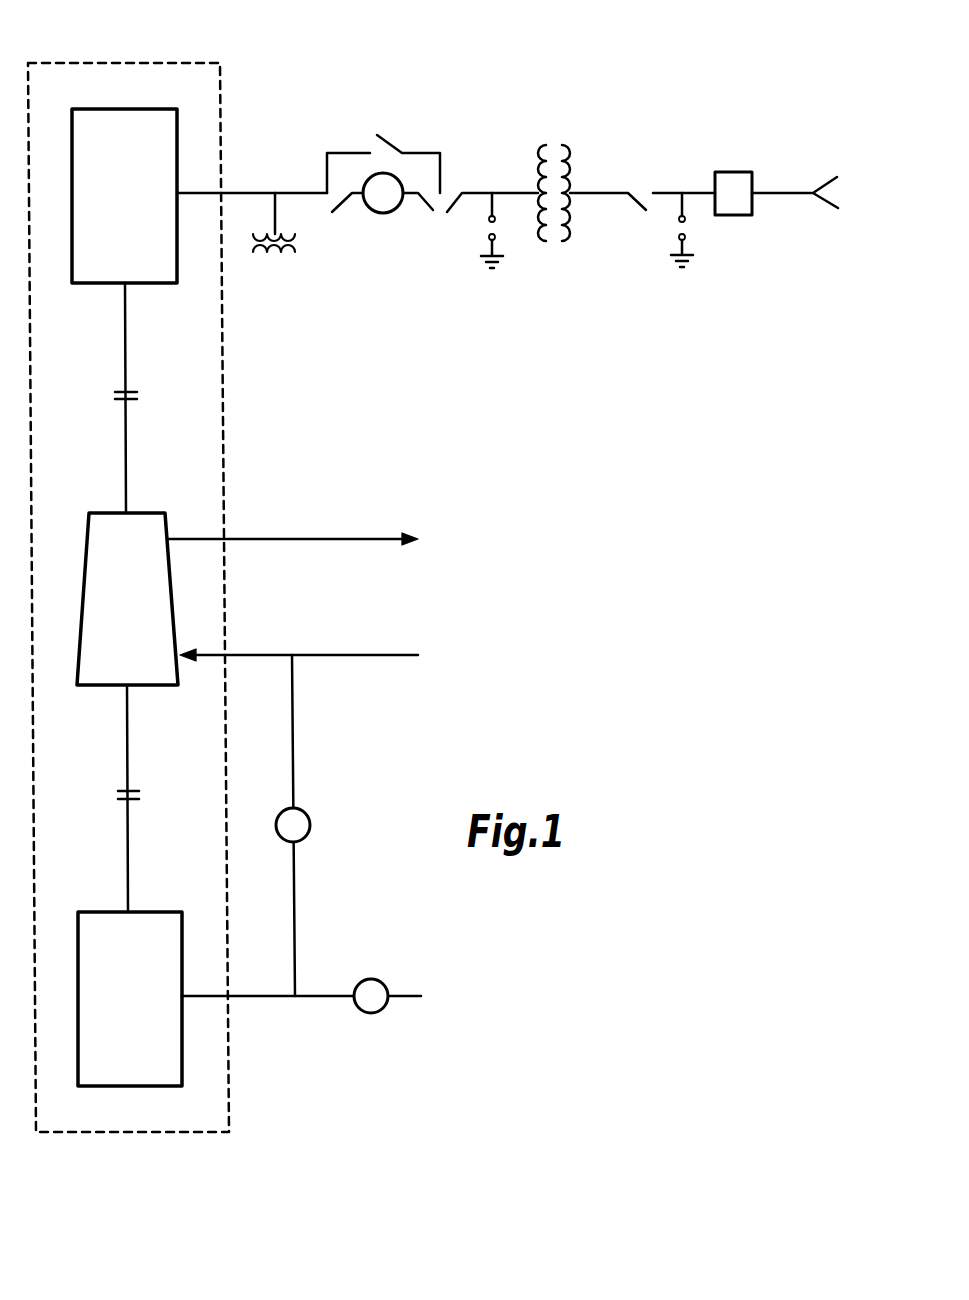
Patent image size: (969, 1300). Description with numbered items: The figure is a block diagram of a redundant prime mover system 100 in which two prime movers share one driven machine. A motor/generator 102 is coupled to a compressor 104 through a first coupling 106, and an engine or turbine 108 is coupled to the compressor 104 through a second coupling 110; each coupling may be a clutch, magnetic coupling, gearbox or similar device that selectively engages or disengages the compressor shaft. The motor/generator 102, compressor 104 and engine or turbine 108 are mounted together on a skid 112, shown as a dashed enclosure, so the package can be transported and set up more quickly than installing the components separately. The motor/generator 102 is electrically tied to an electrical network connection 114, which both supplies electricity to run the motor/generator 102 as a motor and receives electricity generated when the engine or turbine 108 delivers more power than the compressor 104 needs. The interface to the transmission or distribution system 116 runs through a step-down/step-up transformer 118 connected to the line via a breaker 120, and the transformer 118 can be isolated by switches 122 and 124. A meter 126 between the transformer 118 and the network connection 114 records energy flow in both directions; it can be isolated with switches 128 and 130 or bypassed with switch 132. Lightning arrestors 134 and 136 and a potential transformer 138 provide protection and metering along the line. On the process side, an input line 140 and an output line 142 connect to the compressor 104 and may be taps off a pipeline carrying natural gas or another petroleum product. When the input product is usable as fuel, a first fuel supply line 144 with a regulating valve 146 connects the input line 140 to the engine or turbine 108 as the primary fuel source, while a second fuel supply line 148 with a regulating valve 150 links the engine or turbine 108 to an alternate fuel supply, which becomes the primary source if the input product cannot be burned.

The redundant prime mover system 100 is at (480, 62).
The motor/generator 102 is at (177, 117).
The compressor 104 is at (170, 525).
The first coupling 106 is at (132, 388).
The engine or turbine 108 is at (184, 928).
The second coupling 110 is at (136, 790).
The skid 112 is at (220, 70).
The electrical network connection 114 is at (233, 193).
The transmission or distribution system 116 is at (825, 200).
The step-down/step-up transformer 118 is at (562, 241).
The breaker 120 is at (733, 215).
The switch 122 is at (447, 213).
The switch 124 is at (638, 203).
The meter 126 is at (383, 214).
The switch 128 is at (333, 213).
The switch 130 is at (433, 212).
The switch 132 is at (378, 135).
The lightning arrestor 134 is at (506, 263).
The lightning arrestor 136 is at (692, 263).
The potential transformer 138 is at (275, 262).
The input line 140 is at (267, 655).
The output line 142 is at (312, 539).
The first fuel supply line 144 is at (289, 748).
The regulating valve 146 is at (305, 820).
The second fuel supply line 148 is at (308, 998).
The regulating valve 150 is at (370, 978).